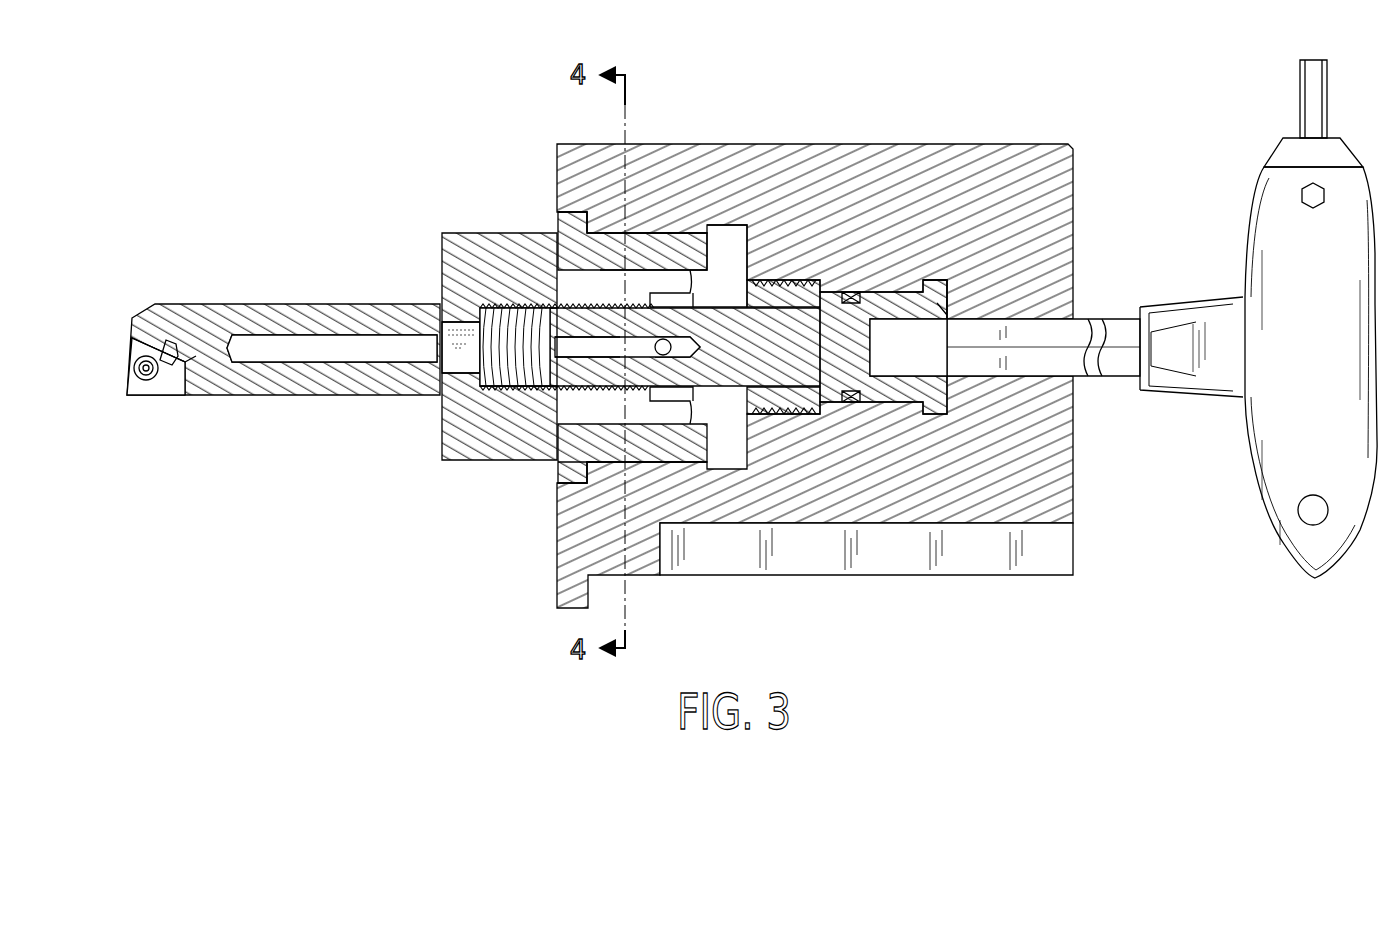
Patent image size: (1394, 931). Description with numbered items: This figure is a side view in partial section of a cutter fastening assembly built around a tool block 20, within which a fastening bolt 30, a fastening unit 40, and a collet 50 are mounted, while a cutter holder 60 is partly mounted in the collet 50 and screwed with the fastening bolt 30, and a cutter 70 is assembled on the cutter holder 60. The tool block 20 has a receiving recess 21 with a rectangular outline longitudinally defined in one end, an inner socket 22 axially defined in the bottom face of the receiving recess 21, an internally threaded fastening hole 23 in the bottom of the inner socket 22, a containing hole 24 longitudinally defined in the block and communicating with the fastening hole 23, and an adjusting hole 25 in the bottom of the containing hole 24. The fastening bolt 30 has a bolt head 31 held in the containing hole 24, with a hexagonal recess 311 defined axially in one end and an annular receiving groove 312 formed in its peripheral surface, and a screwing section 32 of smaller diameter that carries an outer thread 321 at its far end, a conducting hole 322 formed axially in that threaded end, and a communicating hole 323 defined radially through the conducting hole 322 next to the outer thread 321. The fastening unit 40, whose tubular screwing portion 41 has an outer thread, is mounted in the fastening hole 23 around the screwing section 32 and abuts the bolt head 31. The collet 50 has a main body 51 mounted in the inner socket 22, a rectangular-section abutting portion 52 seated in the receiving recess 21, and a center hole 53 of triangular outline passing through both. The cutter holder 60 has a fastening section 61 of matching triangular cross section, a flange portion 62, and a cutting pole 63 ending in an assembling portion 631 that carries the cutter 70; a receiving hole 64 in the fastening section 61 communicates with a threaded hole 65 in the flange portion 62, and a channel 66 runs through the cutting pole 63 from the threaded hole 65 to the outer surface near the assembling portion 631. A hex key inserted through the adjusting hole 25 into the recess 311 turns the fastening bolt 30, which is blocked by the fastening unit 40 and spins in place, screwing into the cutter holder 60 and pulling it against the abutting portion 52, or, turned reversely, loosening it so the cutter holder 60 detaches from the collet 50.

The tool block 20 is at (932, 133).
The receiving recess 21 is at (557, 476).
The inner socket 22 is at (630, 460).
The fastening hole 23 is at (790, 412).
The containing hole 24 is at (880, 402).
The adjusting hole 25 is at (1062, 319).
The fastening bolt 30 is at (888, 338).
The bolt head 31 is at (889, 290).
The recess 311 is at (937, 315).
The receiving groove 312 is at (848, 291).
The screwing section 32 is at (644, 352).
The outer thread 321 is at (527, 383).
The conducting hole 322 is at (598, 350).
The communicating hole 323 is at (690, 360).
The fastening unit 40 is at (756, 247).
The screwing portion 41 is at (768, 290).
The collet 50 is at (555, 218).
The main body 51 is at (674, 240).
The abutting portion 52 is at (570, 210).
The center hole 53 is at (605, 231).
The cutter holder 60 is at (283, 286).
The fastening section 61 is at (648, 268).
The flange portion 62 is at (462, 450).
The cutting pole 63 is at (207, 297).
The assembling portion 631 is at (168, 387).
The receiving hole 64 is at (645, 393).
The threaded hole 65 is at (502, 320).
The channel 66 is at (300, 333).
The cutter 70 is at (128, 394).